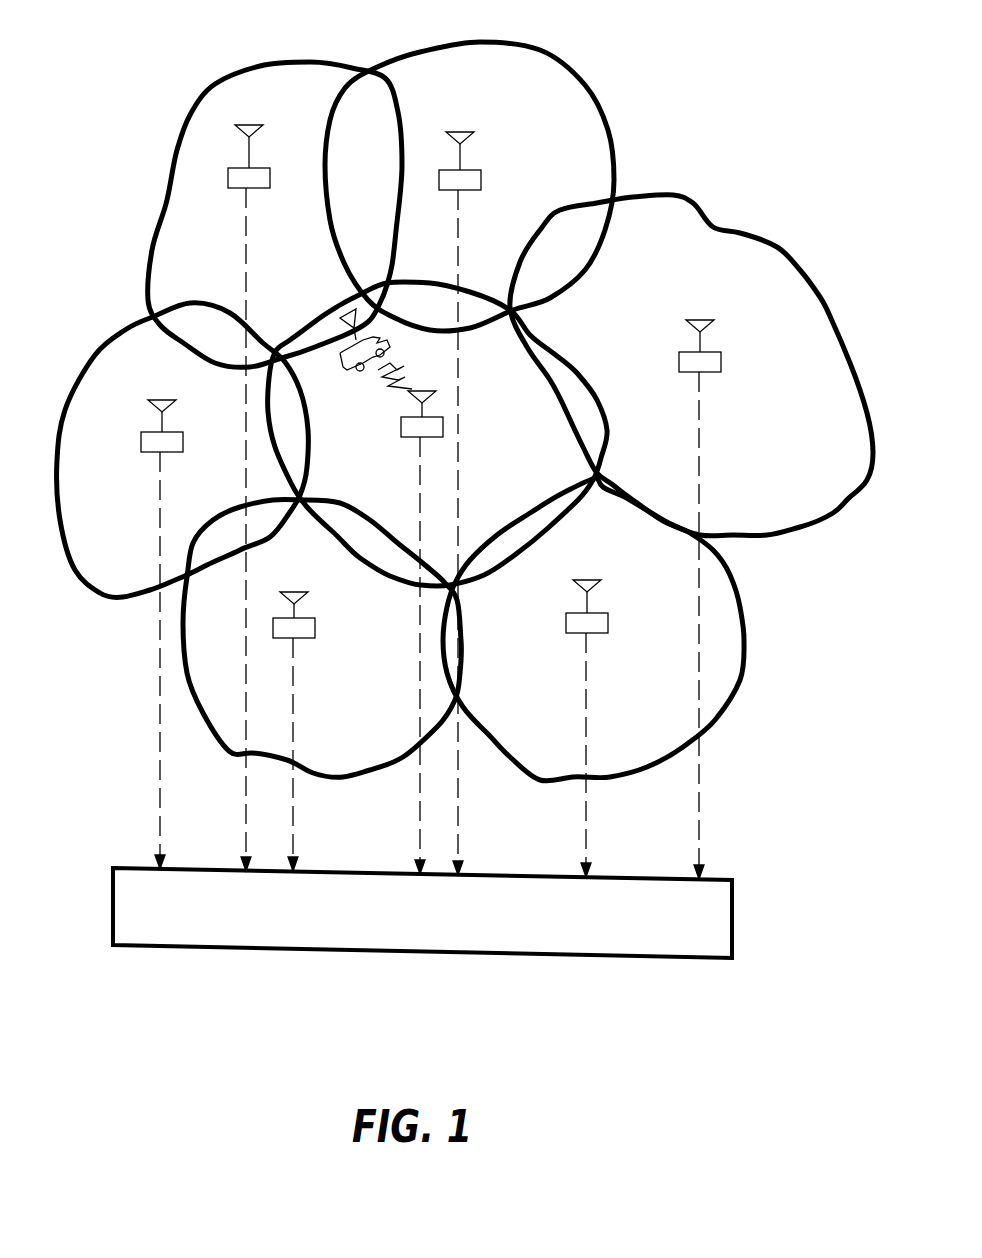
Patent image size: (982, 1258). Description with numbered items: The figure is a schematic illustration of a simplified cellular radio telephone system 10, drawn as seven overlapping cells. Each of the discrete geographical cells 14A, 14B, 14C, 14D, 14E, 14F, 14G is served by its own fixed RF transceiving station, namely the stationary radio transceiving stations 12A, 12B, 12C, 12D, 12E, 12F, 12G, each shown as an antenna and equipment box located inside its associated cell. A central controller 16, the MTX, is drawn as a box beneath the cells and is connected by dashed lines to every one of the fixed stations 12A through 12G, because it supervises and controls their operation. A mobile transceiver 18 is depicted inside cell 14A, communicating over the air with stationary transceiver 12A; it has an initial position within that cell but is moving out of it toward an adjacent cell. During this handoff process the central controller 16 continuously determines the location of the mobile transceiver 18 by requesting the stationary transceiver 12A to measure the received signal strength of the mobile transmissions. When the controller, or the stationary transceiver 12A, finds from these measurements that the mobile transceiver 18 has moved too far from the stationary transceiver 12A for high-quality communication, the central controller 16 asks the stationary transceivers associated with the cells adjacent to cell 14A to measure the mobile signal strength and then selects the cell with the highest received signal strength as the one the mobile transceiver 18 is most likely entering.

The cellular radio telephone system 10 is at (818, 778).
The stationary transceiver 12A is at (446, 426).
The stationary radio transceiving station 12B is at (482, 178).
The stationary radio transceiving station 12C is at (722, 362).
The stationary radio transceiving station 12D is at (568, 624).
The stationary radio transceiving station 12E is at (313, 632).
The stationary radio transceiving station 12F is at (141, 442).
The stationary radio transceiving station 12G is at (266, 165).
The cell 14A is at (584, 350).
The cell 14B is at (613, 142).
The cell 14C is at (836, 333).
The cell 14D is at (745, 672).
The cell 14E is at (356, 779).
The cell 14F is at (113, 600).
The cell 14G is at (280, 62).
The central controller 16 is at (736, 950).
The mobile transceiver 18 is at (340, 372).